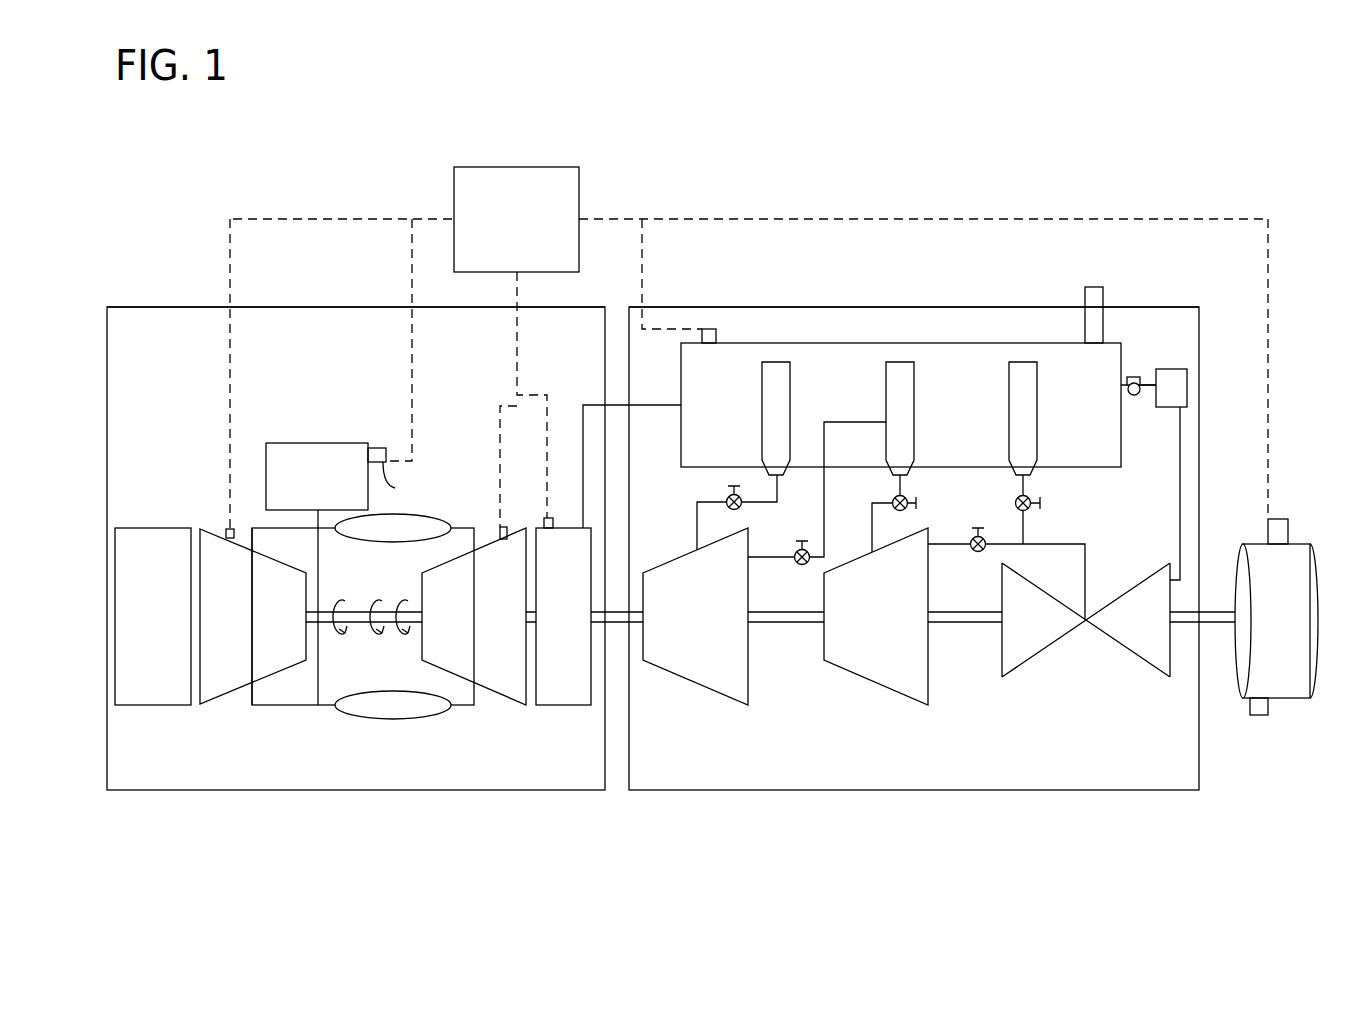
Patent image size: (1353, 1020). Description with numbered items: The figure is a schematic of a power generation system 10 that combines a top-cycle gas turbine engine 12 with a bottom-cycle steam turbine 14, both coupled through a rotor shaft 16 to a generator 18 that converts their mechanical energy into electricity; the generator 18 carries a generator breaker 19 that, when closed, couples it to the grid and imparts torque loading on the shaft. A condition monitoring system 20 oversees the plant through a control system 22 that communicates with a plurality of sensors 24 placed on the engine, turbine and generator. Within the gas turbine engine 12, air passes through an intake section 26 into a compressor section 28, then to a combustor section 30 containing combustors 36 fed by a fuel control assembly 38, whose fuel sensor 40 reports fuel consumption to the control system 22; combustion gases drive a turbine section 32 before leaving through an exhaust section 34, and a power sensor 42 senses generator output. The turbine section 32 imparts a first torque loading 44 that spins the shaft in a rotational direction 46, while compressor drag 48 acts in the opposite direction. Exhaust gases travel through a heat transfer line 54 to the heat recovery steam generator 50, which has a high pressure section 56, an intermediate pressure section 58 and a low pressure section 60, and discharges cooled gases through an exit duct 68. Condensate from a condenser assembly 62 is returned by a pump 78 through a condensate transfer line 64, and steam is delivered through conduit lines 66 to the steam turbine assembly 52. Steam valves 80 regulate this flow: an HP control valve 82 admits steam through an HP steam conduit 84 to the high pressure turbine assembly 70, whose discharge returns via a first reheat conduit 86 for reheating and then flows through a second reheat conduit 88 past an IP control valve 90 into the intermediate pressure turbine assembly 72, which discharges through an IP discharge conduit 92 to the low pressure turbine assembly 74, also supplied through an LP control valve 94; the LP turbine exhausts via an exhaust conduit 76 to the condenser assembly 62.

The power generation system 10 is at (810, 142).
The gas turbine engine 12 is at (148, 307).
The steam turbine 14 is at (920, 307).
The rotor shaft 16 is at (352, 622).
The generator 18 is at (1291, 698).
The generator breaker 19 is at (1258, 716).
The condition monitoring system 20 is at (621, 170).
The control system 22 is at (527, 167).
The sensor 24 is at (228, 529).
The intake section 26 is at (138, 528).
The compressor section 28 is at (220, 705).
The combustor section 30 is at (407, 731).
The turbine section 32 is at (500, 697).
The exhaust section 34 is at (567, 707).
The combustor 36 is at (418, 516).
The fuel control assembly 38 is at (293, 444).
The fuel sensor 40 is at (401, 480).
The power sensor 42 is at (262, 562).
The first torque loading 44 is at (380, 600).
The rotational direction 46 is at (407, 603).
The compressor drag 48 is at (341, 603).
The heat recovery steam generator 50 is at (865, 343).
The steam turbine assembly 52 is at (865, 715).
The heat transfer line 54 is at (657, 405).
The high pressure section 56 is at (790, 386).
The intermediate pressure section 58 is at (915, 386).
The low pressure section 60 is at (1037, 386).
The condenser assembly 62 is at (1172, 369).
The condensate transfer line 64 is at (1147, 395).
The conduit line 66 is at (778, 490).
The exit duct 68 is at (1103, 288).
The high pressure turbine assembly 70 is at (748, 695).
The intermediate pressure turbine assembly 72 is at (928, 685).
The low pressure turbine assembly 74 is at (1040, 655).
The exhaust conduit 76 is at (1180, 504).
The pump 78 is at (1134, 377).
The steam valve 80 is at (802, 566).
The HP control valve 82 is at (738, 509).
The HP steam conduit 84 is at (712, 495).
The first reheat conduit 86 is at (826, 494).
The second reheat conduit 88 is at (871, 517).
The IP control valve 90 is at (908, 503).
The IP discharge conduit 92 is at (949, 544).
The LP control valve 94 is at (1031, 503).